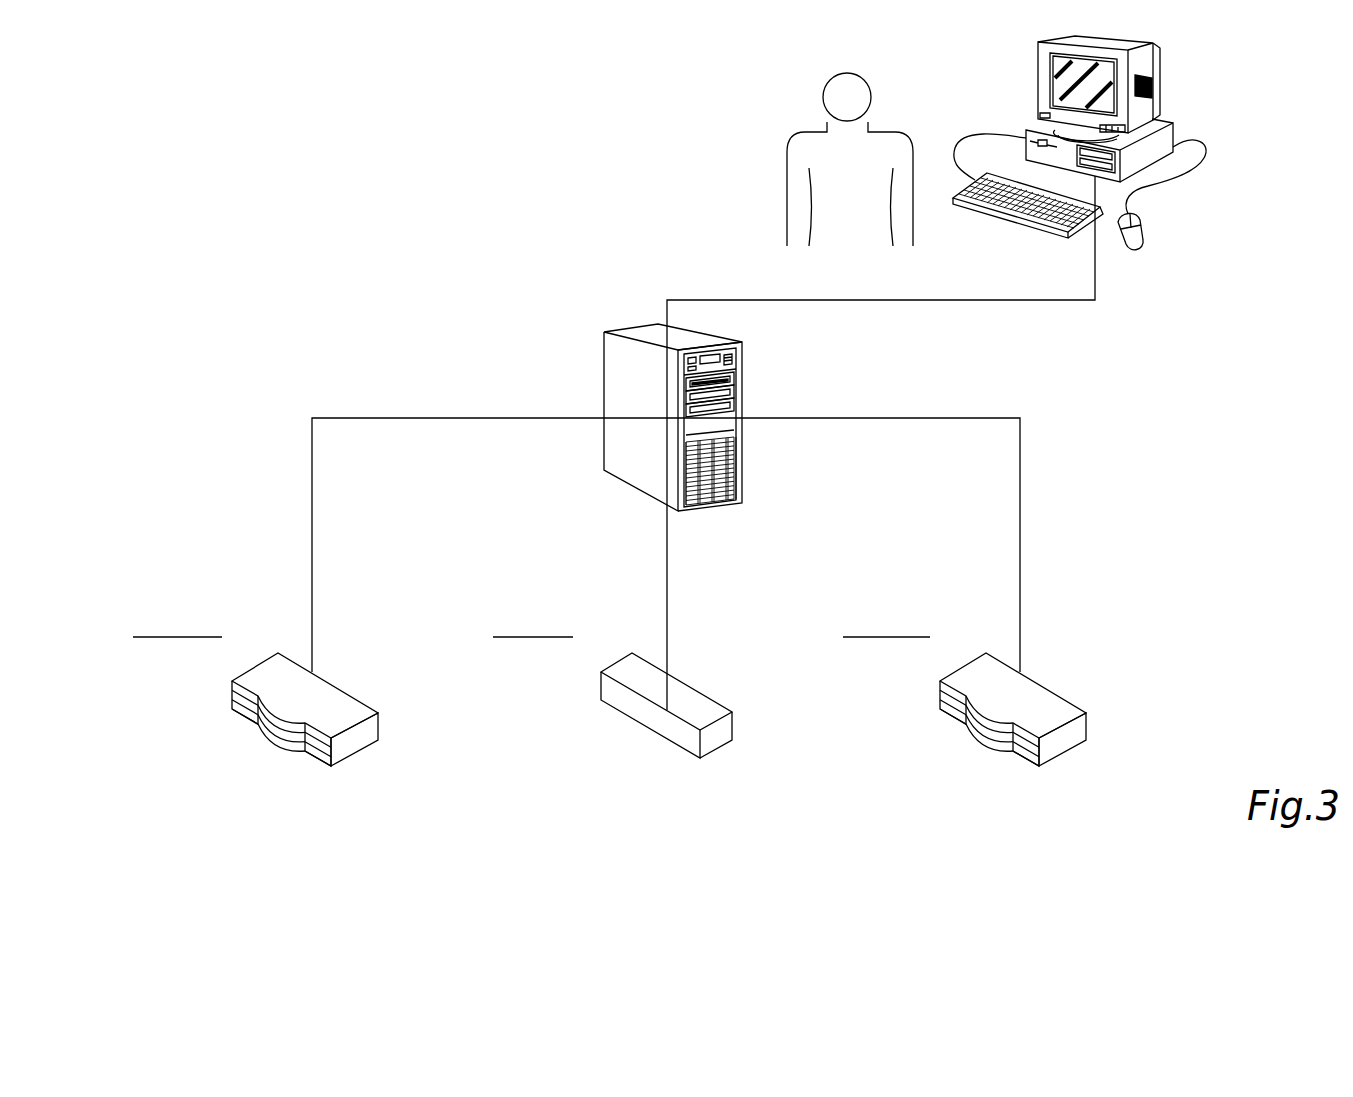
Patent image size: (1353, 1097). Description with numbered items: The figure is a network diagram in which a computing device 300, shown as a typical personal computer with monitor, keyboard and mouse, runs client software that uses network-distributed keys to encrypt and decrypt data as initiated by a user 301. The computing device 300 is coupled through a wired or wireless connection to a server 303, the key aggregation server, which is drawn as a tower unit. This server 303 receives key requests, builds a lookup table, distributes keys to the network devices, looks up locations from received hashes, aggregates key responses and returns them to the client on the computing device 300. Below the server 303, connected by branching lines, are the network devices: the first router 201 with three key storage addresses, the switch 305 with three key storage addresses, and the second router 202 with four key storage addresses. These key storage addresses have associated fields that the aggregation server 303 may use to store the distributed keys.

The computing device 300 is at (1037, 84).
The user 301 is at (823, 97).
The server 303 is at (604, 355).
The router 201 is at (357, 755).
The switch 305 is at (718, 752).
The router 202 is at (1065, 755).